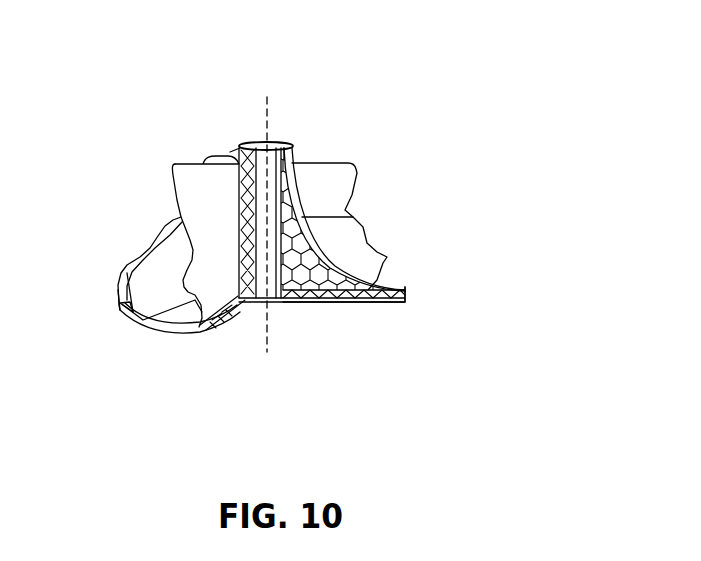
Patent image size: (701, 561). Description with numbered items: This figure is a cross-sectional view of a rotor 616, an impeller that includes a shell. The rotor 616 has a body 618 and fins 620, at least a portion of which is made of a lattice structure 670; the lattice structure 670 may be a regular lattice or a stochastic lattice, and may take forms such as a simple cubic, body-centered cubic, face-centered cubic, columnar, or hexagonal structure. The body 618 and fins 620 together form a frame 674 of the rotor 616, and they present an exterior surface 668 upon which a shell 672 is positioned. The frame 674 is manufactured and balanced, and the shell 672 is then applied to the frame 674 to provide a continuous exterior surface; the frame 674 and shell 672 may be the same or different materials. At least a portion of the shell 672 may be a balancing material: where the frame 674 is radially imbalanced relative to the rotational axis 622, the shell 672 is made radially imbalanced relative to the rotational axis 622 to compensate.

The rotational axis 622 is at (267, 98).
The fins 620 is at (327, 173).
The rotor 616 is at (423, 133).
The shell 672 is at (310, 252).
The body 618 is at (376, 296).
The frame 674 is at (240, 306).
The lattice structure 670 is at (287, 303).
The exterior surface 668 is at (343, 305).